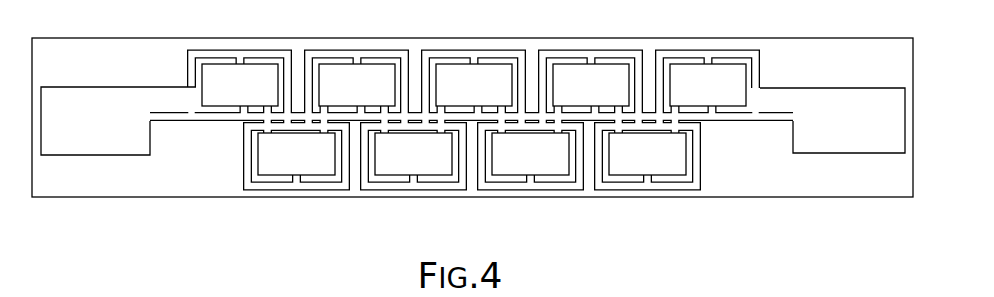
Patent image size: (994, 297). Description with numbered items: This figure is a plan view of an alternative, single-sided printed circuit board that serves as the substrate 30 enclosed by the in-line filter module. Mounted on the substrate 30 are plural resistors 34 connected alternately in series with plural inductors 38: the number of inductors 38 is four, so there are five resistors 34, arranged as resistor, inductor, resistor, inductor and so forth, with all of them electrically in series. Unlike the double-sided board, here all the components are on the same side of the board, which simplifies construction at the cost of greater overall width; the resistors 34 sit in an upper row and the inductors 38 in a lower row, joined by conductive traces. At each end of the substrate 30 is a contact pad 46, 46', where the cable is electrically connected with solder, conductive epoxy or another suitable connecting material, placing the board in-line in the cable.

The substrate 30 is at (125, 38).
The resistors 34 is at (474, 56).
The inductors 38 is at (462, 184).
The contact pad 46 is at (118, 161).
The contact pad 46' is at (828, 80).